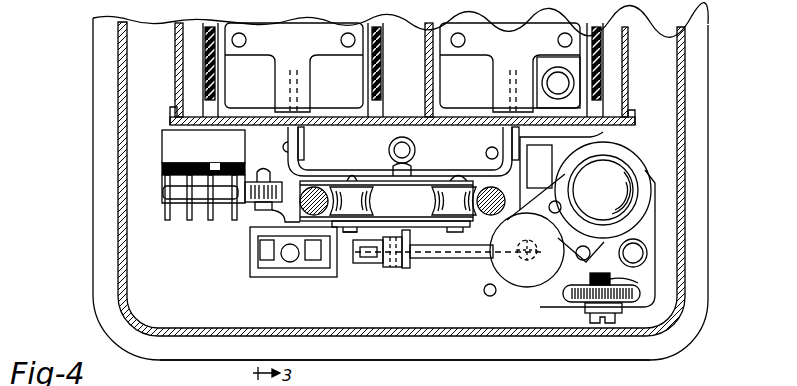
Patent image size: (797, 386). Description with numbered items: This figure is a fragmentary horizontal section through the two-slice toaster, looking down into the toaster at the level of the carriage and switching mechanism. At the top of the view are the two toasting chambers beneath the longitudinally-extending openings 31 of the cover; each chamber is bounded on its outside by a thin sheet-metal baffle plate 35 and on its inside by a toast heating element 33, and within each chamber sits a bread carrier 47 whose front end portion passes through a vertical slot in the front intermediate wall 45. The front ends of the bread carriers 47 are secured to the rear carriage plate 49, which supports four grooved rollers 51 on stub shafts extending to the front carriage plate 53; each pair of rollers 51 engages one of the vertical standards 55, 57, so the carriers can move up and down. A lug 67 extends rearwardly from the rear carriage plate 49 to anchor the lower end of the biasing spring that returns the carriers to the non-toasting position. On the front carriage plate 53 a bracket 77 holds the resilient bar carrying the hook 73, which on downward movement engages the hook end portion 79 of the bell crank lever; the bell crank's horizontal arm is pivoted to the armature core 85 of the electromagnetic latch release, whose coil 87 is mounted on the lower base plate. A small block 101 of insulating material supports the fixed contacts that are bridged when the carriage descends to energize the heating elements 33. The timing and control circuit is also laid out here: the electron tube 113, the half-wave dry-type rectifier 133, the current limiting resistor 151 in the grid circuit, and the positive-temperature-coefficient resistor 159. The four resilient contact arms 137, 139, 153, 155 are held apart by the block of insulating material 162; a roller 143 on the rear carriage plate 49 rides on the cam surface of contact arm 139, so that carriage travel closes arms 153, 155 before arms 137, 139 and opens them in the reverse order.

The longitudinally-extending opening 31 is at (500, 384).
The toast heating element 33 is at (211, 92).
The baffle plate 35 is at (177, 44).
The front intermediate wall 45 is at (268, 128).
The bread carrier 47 is at (330, 60).
The rear carriage plate 49 is at (369, 167).
The grooved roller 51 is at (377, 213).
The front carriage plate 53 is at (343, 230).
The vertical standard 55 is at (317, 187).
The vertical standard 57 is at (487, 190).
The lug 67 is at (418, 165).
The hook 73 is at (386, 252).
The bracket 77 is at (403, 268).
The hook end portion 79 is at (378, 264).
The armature core 85 is at (528, 262).
The coil 87 is at (500, 265).
The block of electric-insulating material 101 is at (273, 277).
The electron tube 113 is at (651, 178).
The half-wave dry-type rectifier 133 is at (590, 137).
The resilient contact arm 137 is at (210, 220).
The resilient contact arm 139 is at (232, 220).
The roller 143 is at (262, 213).
The current limiting resistor 151 is at (648, 255).
The resilient contact arm 153 is at (167, 220).
The resilient contact arm 155 is at (189, 220).
The resistor 159 is at (548, 70).
The block of electric-insulating material 162 is at (160, 133).